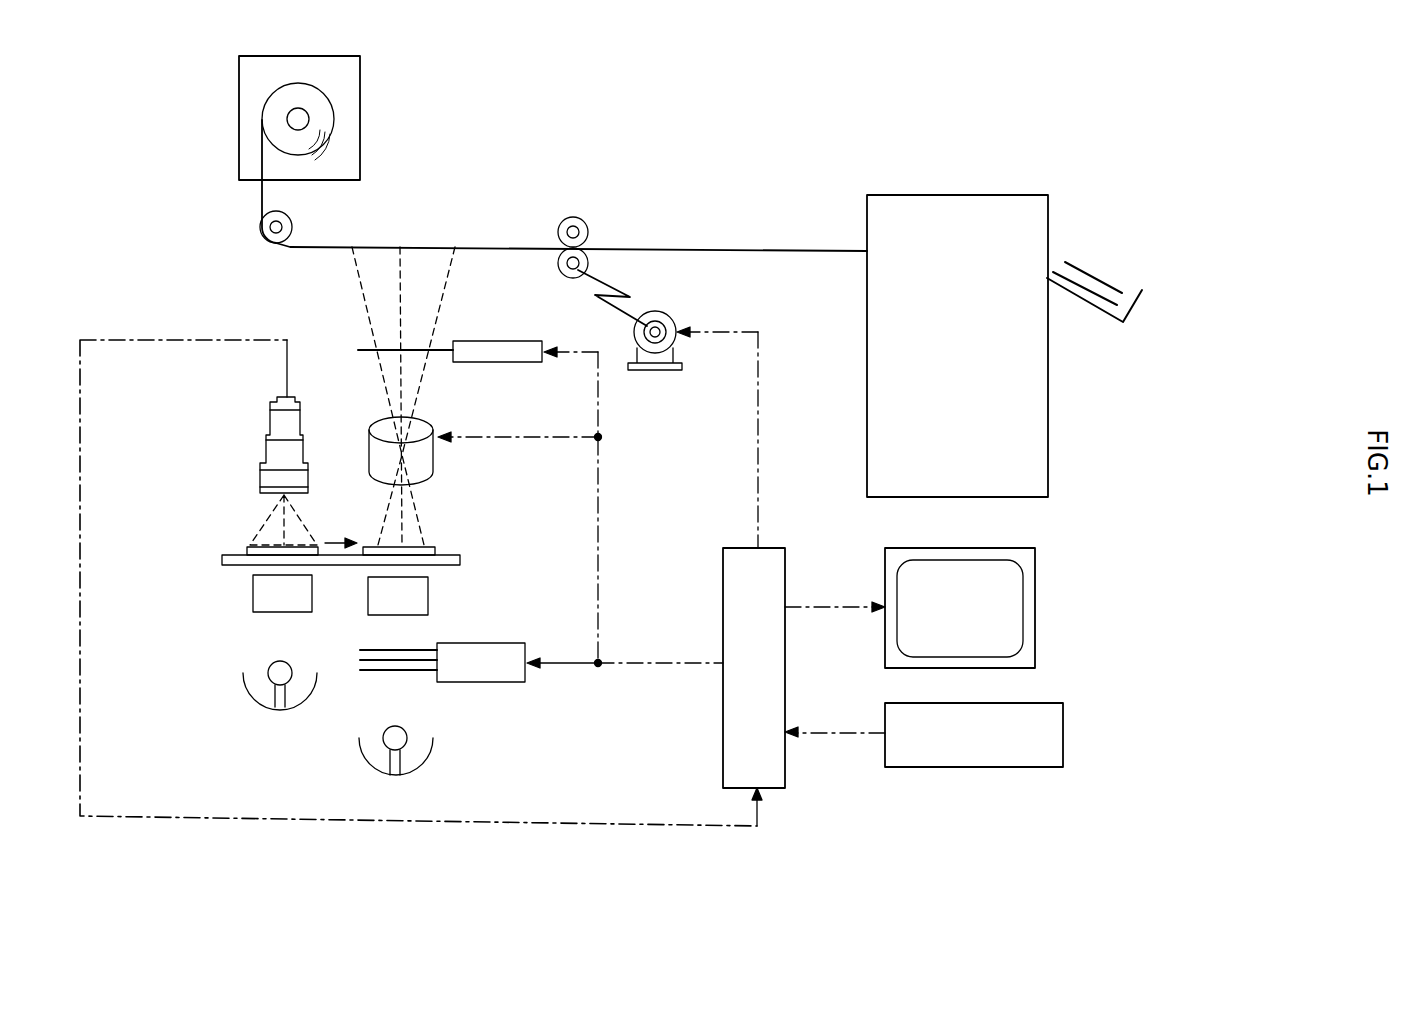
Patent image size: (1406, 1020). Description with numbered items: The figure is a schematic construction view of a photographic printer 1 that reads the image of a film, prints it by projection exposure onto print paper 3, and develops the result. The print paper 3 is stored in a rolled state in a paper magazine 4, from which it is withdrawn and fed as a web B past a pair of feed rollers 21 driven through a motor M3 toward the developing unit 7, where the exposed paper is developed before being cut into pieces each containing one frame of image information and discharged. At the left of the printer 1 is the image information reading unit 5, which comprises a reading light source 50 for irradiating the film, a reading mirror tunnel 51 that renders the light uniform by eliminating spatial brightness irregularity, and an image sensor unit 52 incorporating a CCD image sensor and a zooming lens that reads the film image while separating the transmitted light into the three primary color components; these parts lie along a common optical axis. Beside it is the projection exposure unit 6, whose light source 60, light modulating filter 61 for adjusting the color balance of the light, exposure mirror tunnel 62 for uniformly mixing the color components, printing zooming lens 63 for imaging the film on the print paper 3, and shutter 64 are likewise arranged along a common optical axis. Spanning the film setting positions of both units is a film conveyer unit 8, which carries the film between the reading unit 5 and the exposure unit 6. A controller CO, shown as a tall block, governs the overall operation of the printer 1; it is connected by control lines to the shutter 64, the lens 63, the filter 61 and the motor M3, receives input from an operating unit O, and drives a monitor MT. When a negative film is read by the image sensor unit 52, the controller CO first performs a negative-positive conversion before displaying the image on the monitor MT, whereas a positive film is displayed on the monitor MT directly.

The photographic printer 1 is at (165, 750).
The print paper 3 is at (258, 202).
The paper magazine 4 is at (360, 103).
The image information reading unit 5 is at (243, 510).
The projection exposure unit 6 is at (445, 530).
The developing unit 7 is at (966, 192).
The film conveyer unit 8 is at (222, 559).
The feed rollers 21 is at (588, 217).
The reading light source 50 is at (266, 705).
The reading mirror tunnel 51 is at (253, 600).
The image sensor unit 52 is at (275, 420).
The lamp 60 is at (413, 770).
The light modulating filter 61 is at (480, 676).
The exposure mirror tunnel 62 is at (428, 598).
The printing zooming lens 63 is at (432, 428).
The shutter 64 is at (358, 350).
The strip B is at (475, 220).
The motor M3 is at (673, 315).
The controller CO is at (723, 573).
The monitor MT is at (1035, 605).
The operation unit O is at (1063, 735).